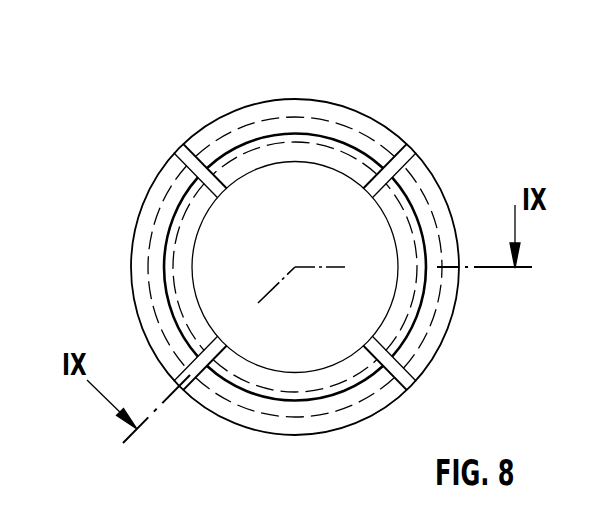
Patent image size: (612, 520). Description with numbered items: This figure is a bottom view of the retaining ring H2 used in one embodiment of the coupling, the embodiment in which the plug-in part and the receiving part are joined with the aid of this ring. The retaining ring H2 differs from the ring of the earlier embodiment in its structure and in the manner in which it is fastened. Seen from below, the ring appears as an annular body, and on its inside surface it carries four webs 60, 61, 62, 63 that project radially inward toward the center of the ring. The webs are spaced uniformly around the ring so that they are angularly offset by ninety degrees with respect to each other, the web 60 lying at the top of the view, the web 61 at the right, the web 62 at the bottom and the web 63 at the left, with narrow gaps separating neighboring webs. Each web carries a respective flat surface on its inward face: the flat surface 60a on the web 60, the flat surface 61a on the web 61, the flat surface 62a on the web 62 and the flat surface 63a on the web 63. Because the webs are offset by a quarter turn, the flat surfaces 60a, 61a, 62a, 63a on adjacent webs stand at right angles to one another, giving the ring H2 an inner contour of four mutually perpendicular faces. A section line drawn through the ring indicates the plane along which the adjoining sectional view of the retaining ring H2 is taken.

The web 60 is at (335, 127).
The flat surface 60a is at (295, 133).
The web 61 is at (433, 317).
The flat surface 61a is at (430, 222).
The web 62 is at (336, 410).
The flat surface 62a is at (278, 404).
The web 63 is at (157, 227).
The flat surface 63a is at (167, 206).
The retaining ring H2 is at (421, 120).